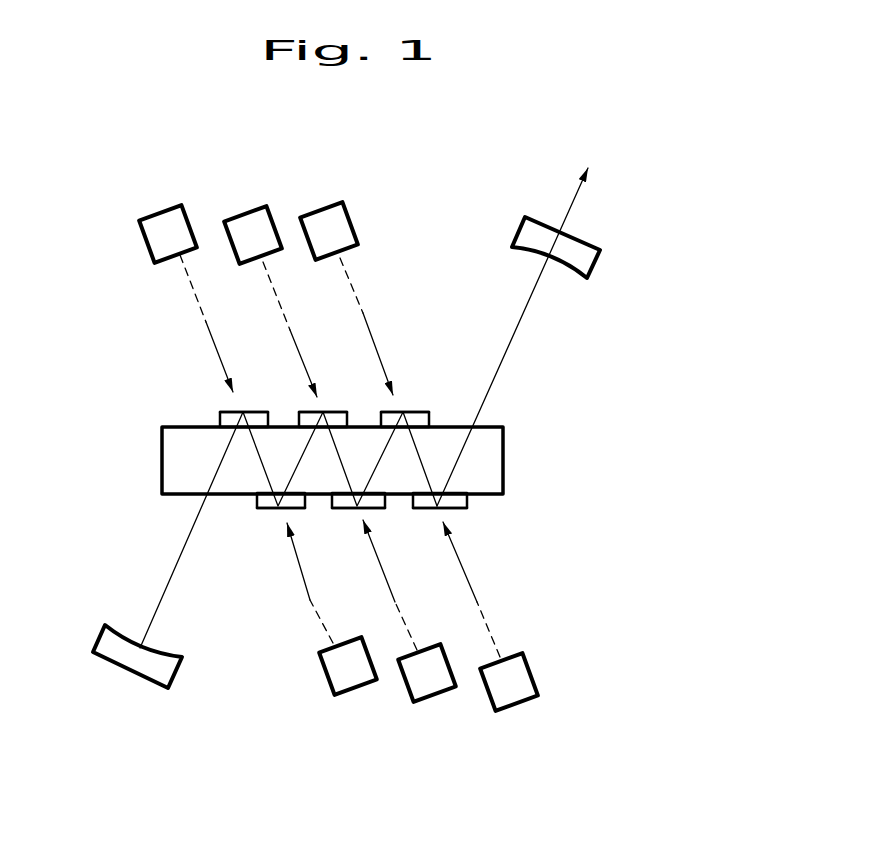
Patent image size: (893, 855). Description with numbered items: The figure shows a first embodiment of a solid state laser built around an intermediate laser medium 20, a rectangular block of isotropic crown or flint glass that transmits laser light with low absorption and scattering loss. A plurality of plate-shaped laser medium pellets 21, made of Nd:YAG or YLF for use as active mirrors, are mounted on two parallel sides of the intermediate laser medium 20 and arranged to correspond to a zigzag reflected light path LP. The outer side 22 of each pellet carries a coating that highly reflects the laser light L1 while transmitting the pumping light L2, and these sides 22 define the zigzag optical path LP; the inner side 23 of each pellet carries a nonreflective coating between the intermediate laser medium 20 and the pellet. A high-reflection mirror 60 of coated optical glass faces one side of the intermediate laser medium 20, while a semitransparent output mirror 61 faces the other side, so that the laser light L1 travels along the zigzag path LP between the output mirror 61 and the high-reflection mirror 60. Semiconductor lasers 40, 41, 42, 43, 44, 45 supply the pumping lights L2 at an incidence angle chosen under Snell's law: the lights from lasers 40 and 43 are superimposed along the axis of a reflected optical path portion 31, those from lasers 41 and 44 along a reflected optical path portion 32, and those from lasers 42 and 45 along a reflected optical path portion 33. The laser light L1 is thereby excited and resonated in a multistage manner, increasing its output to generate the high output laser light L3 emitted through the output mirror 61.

The intermediate laser medium 20 is at (503, 477).
The laser medium pellets 21 is at (217, 417).
The side of the laser medium pellets 22 is at (240, 410).
The side of each laser medium pellet 23 is at (273, 490).
The reflected optical path portion 31 is at (240, 450).
The reflected optical path portion 32 is at (330, 445).
The reflected optical path portion 33 is at (410, 452).
The semiconductor laser 40 is at (158, 208).
The semiconductor laser 41 is at (245, 208).
The semiconductor laser 42 is at (320, 208).
The semiconductor laser 43 is at (352, 695).
The semiconductor laser 44 is at (440, 697).
The semiconductor laser 45 is at (517, 710).
The high-reflection mirror 60 is at (132, 677).
The output mirror 61 is at (597, 265).
The laser light L1 is at (167, 577).
The laser light for pumping L2 is at (283, 325).
The laser output light L3 is at (572, 212).
The zigzag reflected light path LP is at (192, 500).